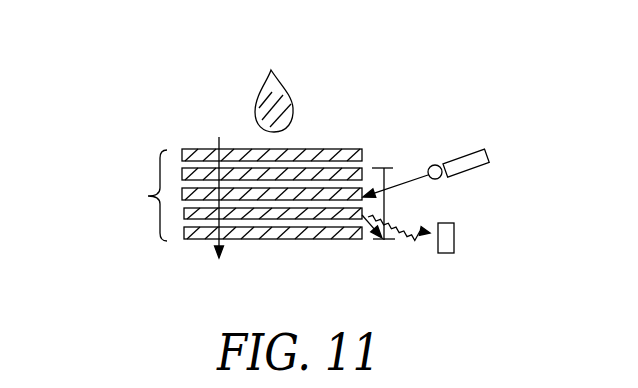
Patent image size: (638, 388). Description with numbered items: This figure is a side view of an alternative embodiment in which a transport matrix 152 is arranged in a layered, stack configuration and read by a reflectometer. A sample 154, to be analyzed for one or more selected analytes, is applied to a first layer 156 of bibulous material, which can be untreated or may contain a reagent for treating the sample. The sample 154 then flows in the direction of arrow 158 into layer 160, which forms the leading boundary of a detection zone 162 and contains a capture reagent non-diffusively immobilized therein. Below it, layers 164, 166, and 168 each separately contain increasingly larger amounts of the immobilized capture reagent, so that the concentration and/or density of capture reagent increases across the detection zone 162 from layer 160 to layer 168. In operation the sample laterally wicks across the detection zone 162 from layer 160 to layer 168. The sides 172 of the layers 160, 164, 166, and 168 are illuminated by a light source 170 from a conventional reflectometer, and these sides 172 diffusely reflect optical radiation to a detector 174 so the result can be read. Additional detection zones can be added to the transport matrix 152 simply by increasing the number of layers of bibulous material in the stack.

The transport matrix 152 is at (134, 195).
The sample 154 is at (265, 101).
The first layer 156 is at (275, 126).
The arrow 158 is at (219, 137).
The layer 160 is at (240, 141).
The layer 164 is at (232, 148).
The layer 166 is at (237, 242).
The layer 168 is at (242, 266).
The detection zone 162 is at (419, 169).
The light source 170 is at (456, 155).
The sides 172 is at (421, 252).
The detector 174 is at (445, 230).